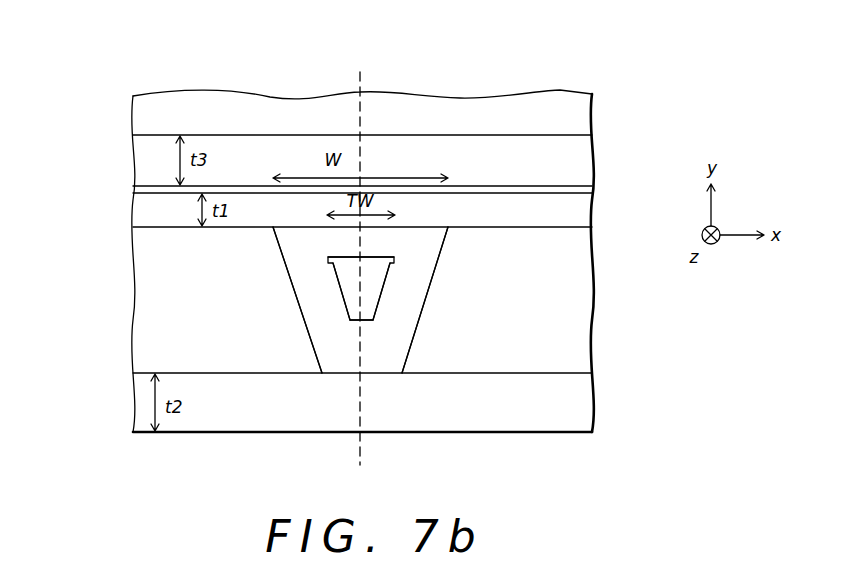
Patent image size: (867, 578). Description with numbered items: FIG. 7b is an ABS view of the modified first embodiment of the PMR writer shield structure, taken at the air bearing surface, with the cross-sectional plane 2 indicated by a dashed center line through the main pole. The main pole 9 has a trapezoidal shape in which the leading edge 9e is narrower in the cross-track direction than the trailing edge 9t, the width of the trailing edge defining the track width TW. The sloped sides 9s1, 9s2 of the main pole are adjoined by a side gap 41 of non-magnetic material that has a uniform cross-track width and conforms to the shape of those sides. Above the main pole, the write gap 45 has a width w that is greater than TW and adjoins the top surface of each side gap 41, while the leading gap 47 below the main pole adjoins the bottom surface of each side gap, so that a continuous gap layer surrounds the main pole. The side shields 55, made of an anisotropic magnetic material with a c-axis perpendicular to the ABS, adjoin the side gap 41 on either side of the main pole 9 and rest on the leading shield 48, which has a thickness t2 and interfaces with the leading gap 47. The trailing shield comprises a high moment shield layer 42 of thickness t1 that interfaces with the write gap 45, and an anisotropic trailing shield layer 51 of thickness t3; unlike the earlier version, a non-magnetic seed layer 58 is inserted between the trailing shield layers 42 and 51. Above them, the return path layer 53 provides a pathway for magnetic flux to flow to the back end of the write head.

The plane 2 is at (360, 251).
The return path layer 53 is at (575, 117).
The anisotropic trailing shield layer 51 is at (575, 167).
The non-magnetic seed layer 58 is at (152, 187).
The high moment shield layer 42 is at (575, 210).
The write gap 45 is at (378, 236).
The side gap 41 is at (323, 300).
The side shields 55 is at (153, 306).
The leading shield 48 is at (575, 405).
The main pole 9 is at (380, 266).
The trailing edge 9t is at (337, 263).
The sloped side 9s1 is at (378, 307).
The sloped side 9s2 is at (348, 318).
The leading edge 9e is at (370, 322).
The leading gap 47 is at (352, 348).